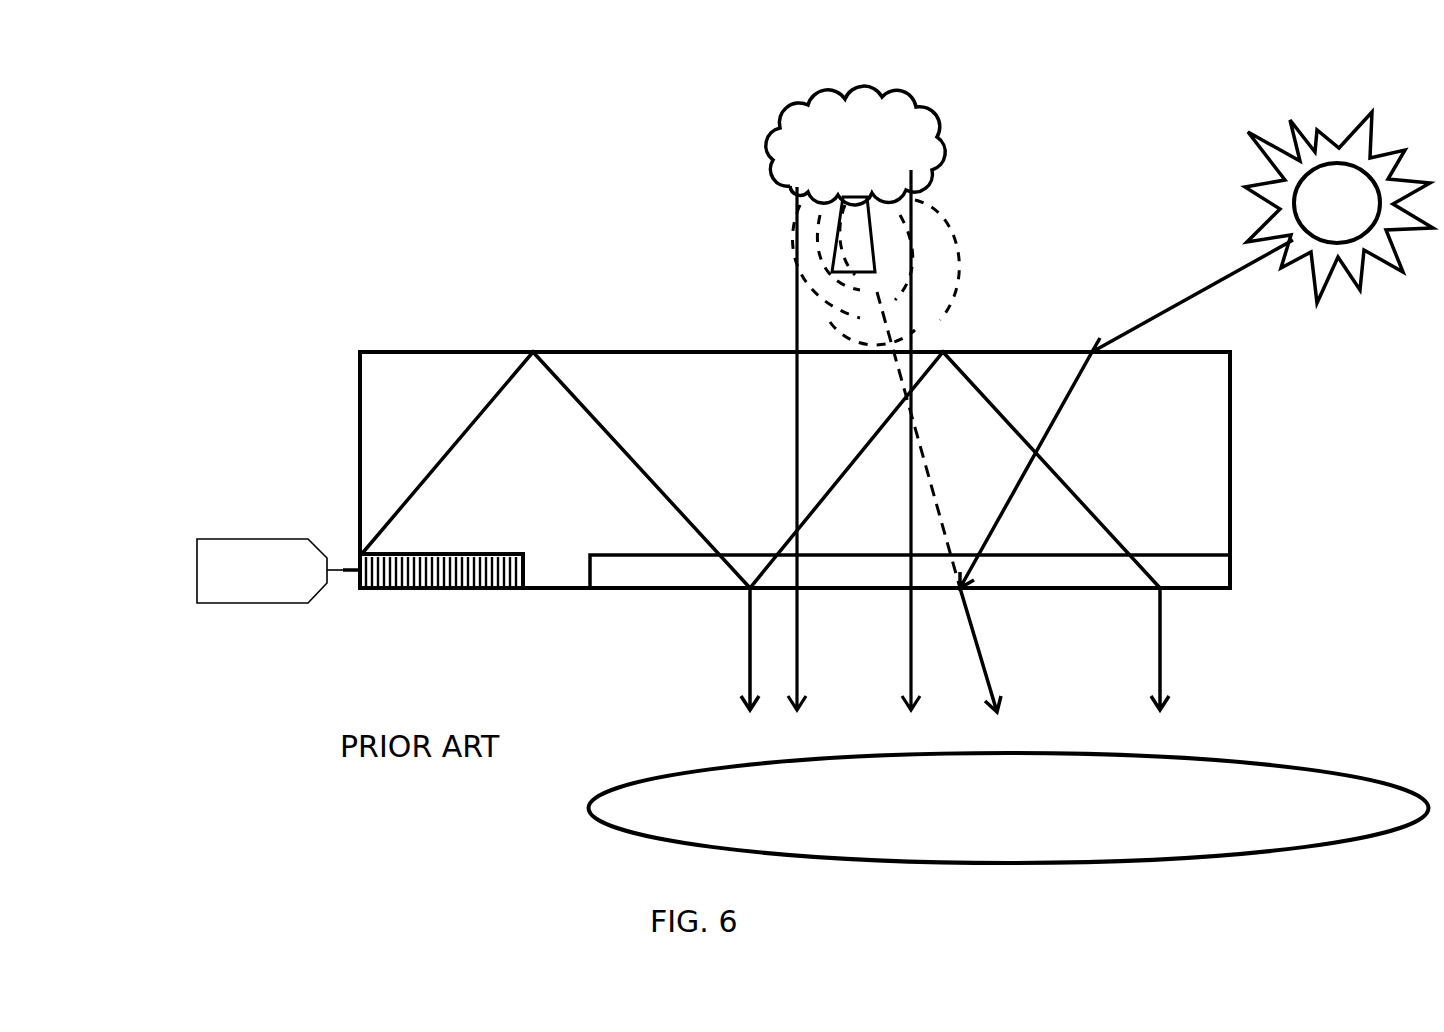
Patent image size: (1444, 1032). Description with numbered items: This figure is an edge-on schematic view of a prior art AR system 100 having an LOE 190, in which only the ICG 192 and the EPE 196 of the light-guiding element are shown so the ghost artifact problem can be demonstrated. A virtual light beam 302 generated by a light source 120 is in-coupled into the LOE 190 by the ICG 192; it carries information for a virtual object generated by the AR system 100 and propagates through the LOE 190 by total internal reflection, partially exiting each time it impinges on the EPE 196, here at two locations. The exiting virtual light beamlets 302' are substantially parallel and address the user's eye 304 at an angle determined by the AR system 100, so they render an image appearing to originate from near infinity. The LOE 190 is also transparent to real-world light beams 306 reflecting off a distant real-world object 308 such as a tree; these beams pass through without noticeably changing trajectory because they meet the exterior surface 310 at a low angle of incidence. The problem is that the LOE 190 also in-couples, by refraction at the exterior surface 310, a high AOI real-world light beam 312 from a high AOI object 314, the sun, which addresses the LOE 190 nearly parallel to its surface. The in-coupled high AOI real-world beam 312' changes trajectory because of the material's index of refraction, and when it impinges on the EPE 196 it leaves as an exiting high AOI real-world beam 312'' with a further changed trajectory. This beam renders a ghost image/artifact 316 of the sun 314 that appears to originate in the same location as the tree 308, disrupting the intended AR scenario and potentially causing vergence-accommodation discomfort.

The AR system 100 is at (375, 228).
The light source 120 is at (243, 572).
The LOE 190 is at (377, 367).
The ICG 192 is at (402, 568).
The EPE 196 is at (1203, 575).
The virtual light beam 302 is at (741, 527).
The virtual light beamlets 302' is at (960, 649).
The user's eye 304 is at (1247, 787).
The real-world light beams 306 is at (795, 347).
The real-world object 308 is at (815, 135).
The exterior surface 310 is at (600, 352).
The high AOI real-world light beam 312 is at (1182, 259).
The in-coupled high AOI real-world beam 312' is at (1156, 470).
The exiting high AOI real-world beam 312'' is at (1040, 650).
The high AOI object 314 is at (1317, 183).
The ghost image/artifact 316 is at (893, 247).